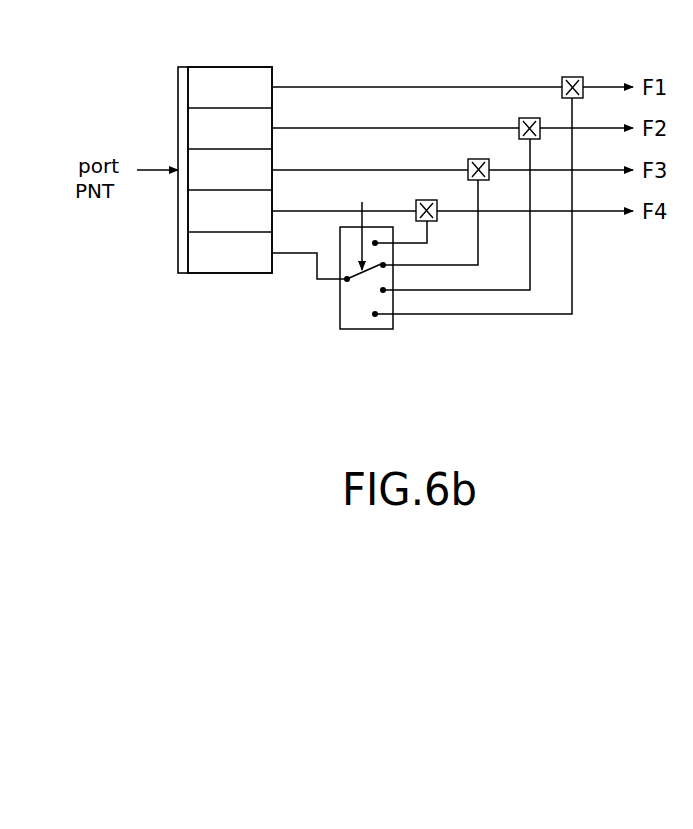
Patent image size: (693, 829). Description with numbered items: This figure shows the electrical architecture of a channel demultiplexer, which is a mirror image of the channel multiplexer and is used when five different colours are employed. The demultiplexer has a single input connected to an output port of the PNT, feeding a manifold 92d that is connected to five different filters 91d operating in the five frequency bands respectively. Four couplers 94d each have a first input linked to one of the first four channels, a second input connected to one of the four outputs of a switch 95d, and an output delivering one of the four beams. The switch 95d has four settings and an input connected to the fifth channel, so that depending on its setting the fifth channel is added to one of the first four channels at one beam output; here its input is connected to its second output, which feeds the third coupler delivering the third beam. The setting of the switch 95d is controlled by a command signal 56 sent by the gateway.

The filters 91d is at (218, 67).
The manifold 92d is at (178, 126).
The couplers 94d is at (572, 77).
The switch 95d is at (355, 330).
The command signal 56 is at (363, 222).